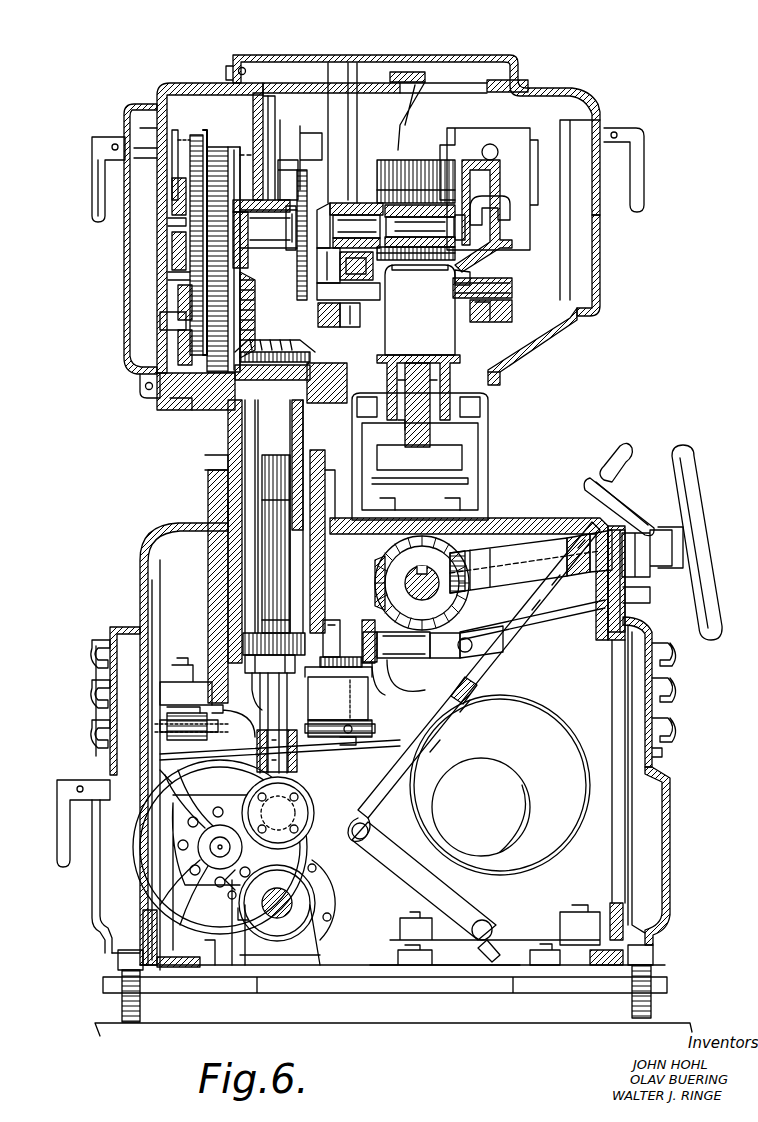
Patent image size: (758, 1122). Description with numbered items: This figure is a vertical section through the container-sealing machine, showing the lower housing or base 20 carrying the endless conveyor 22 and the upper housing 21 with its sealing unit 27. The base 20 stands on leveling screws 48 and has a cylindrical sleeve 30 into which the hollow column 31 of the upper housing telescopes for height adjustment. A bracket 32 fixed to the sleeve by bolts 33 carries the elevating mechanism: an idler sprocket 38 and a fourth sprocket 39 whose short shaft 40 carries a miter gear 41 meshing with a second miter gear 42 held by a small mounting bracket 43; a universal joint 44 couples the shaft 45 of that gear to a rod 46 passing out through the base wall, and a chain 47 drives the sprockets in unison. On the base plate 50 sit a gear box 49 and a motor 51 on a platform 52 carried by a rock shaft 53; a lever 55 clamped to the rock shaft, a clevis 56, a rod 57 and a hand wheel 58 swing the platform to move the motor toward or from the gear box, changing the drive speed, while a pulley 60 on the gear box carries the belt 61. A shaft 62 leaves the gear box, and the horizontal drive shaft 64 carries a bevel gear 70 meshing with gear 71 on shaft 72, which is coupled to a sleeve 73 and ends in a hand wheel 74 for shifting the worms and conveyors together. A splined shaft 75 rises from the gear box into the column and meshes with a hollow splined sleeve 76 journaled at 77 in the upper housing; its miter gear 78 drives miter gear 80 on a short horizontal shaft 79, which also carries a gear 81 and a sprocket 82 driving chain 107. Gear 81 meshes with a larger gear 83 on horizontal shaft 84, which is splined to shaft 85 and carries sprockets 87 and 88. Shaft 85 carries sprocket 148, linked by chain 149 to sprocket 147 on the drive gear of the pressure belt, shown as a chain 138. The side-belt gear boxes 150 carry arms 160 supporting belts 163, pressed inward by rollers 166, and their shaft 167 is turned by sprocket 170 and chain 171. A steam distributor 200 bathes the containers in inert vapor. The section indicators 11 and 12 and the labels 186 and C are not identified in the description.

The section line 11- 11 is at (577, 98).
The section line 12- 12 is at (333, 30).
The lower housing or base 20 is at (140, 598).
The upper housing 21 is at (515, 357).
The endless conveyor 22 is at (445, 355).
The sealing unit 27 is at (432, 148).
The cylindrical sleeve 30 is at (218, 596).
The hollow column 31 is at (245, 432).
The bracket 32 is at (198, 690).
The bolts 33 is at (250, 725).
The idler sprocket 38 is at (160, 732).
The fourth sprocket 39 is at (376, 726).
The short shaft 40 is at (350, 695).
The miter gear 41 is at (368, 640).
The second miter gear 42 is at (385, 640).
The small mounting bracket 43 is at (408, 700).
The universal joint 44 is at (482, 630).
The shaft 45 is at (445, 650).
The rod 46 is at (590, 622).
The chain 47 is at (215, 735).
The leveling screws 48 is at (120, 996).
The gear box 49 is at (336, 842).
The base plate 50 is at (588, 955).
The motor 51 is at (512, 750).
The platform 52 is at (530, 925).
The rock shaft 53 is at (480, 940).
The lever 55 is at (470, 900).
The clevis 56 is at (392, 812).
The rod 57 is at (505, 668).
The hand wheel 58 is at (612, 505).
The pulley 60 is at (148, 845).
The belt 61 is at (356, 752).
The shaft 62 is at (272, 915).
The horizontal drive shaft 64 is at (388, 585).
The bevel gear 70 is at (400, 562).
The gear 71 is at (478, 568).
The shaft 72 is at (515, 550).
The sleeve 73 is at (530, 555).
The hand wheel 74 is at (690, 470).
The splined shaft 75 is at (278, 680).
The hollow splined sleeve 76 is at (255, 484).
The journal 77 is at (232, 410).
The miter gear 78 is at (290, 352).
The short horizontal shaft 79 is at (172, 322).
The miter gear 80 is at (230, 308).
The gear 81 is at (252, 300).
The sprocket 82 is at (190, 330).
The larger gear 83 is at (222, 140).
The horizontal shaft 84 is at (178, 215).
The shaft 85 is at (300, 215).
The sprocket 87 is at (180, 272).
The sprocket 88 is at (182, 232).
The chain 107 is at (196, 280).
The pressure belt chain 138 is at (455, 178).
The sprocket 147 is at (302, 158).
The sprocket 148 is at (318, 268).
The chain 149 is at (305, 185).
The gear boxes 150 is at (318, 135).
The arm 160 is at (357, 305).
The belt 163 is at (512, 280).
The rollers 166 is at (392, 290).
The shaft 167 is at (282, 162).
The sprocket 170 is at (196, 135).
The chain 171 is at (207, 165).
The bearing 186 is at (170, 200).
The steam distributor 200 is at (515, 242).
The cylinder C is at (422, 309).